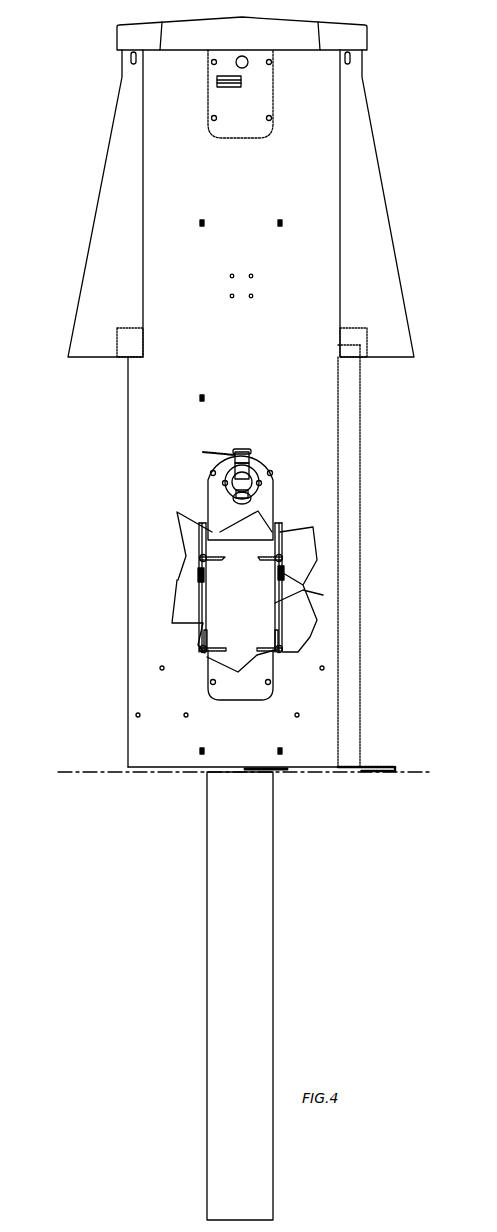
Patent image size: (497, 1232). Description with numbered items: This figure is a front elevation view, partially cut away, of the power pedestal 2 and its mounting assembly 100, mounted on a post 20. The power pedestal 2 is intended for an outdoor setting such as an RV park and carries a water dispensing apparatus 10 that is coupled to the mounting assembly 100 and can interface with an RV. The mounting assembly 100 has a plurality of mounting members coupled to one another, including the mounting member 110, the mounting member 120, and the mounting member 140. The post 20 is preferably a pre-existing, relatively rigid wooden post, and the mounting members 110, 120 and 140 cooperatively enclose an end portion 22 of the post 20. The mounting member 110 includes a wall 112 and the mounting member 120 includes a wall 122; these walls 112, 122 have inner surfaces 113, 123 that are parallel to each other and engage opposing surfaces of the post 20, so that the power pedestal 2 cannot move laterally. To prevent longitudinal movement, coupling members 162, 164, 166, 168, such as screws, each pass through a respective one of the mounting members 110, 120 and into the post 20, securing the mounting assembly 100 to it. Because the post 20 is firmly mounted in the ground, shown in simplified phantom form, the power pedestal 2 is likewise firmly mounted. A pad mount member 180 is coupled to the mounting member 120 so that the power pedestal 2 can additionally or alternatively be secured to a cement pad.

The power pedestal 2 is at (77, 98).
The mounting assembly 100 is at (85, 190).
The mounting member 140 is at (159, 385).
The pad mount member 180 is at (373, 778).
The post 20 is at (228, 902).
The water dispensing apparatus 10 is at (248, 465).
The end portion 22 is at (285, 547).
The coupling member 162 is at (215, 553).
The coupling member 166 is at (262, 556).
The coupling member 164 is at (213, 682).
The coupling member 168 is at (268, 682).
The wall 112 is at (203, 585).
The mounting member 110 is at (207, 608).
The inner surface 113 is at (207, 625).
The wall 122 is at (303, 585).
The mounting member 120 is at (282, 602).
The inner surface 123 is at (290, 623).